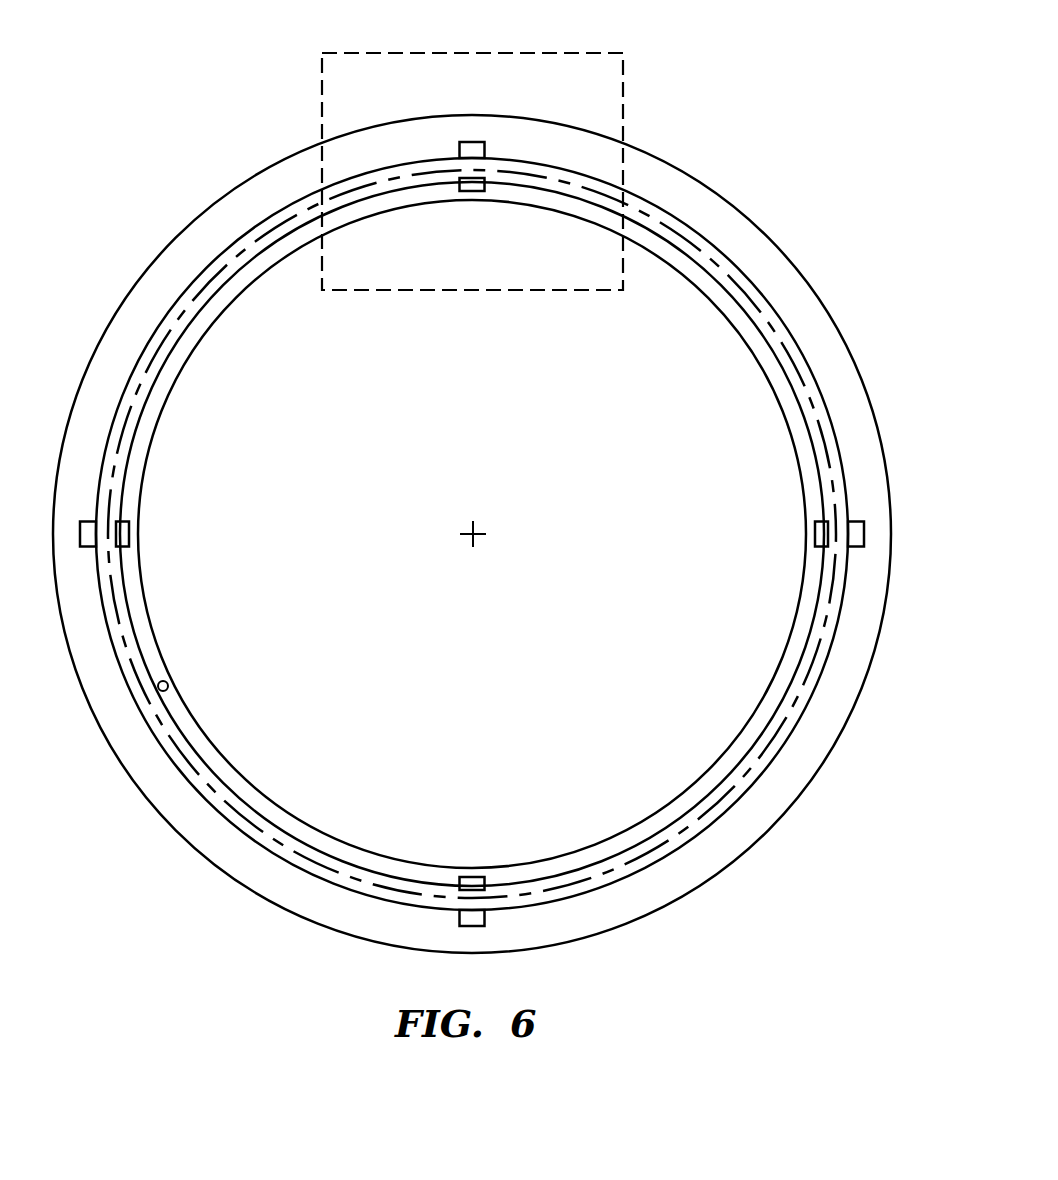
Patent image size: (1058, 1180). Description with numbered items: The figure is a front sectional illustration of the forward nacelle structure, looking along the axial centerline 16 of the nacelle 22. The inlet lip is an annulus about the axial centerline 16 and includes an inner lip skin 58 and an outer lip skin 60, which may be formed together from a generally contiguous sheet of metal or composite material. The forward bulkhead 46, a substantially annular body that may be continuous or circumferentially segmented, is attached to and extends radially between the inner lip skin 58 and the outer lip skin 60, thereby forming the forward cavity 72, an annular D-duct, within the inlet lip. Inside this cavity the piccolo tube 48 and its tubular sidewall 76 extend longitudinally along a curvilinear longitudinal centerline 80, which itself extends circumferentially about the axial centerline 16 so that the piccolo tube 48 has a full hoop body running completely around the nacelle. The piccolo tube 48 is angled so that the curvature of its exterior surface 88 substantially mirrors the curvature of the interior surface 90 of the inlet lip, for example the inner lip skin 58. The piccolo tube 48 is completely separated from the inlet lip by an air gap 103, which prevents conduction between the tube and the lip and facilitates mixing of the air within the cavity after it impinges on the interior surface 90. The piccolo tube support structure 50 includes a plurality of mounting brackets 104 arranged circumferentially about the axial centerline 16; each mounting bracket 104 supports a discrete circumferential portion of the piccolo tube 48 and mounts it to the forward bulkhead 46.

The axial centerline 16 is at (478, 538).
The seal assembly 22 is at (729, 123).
The forward bulkhead 46 is at (502, 534).
The piccolo tube 48 is at (472, 528).
The piccolo tube support structure 50 is at (484, 134).
The inner lip skin 58 is at (770, 393).
The outer lip skin 60 is at (870, 362).
The forward cavity 72 is at (96, 672).
The tubular sidewall 76 is at (748, 277).
The curvilinear longitudinal centerline 80 is at (238, 384).
The exterior surface 88 is at (138, 648).
The interior surface 90 is at (168, 689).
The gap 103 is at (802, 636).
The mounting brackets 104 is at (472, 194).